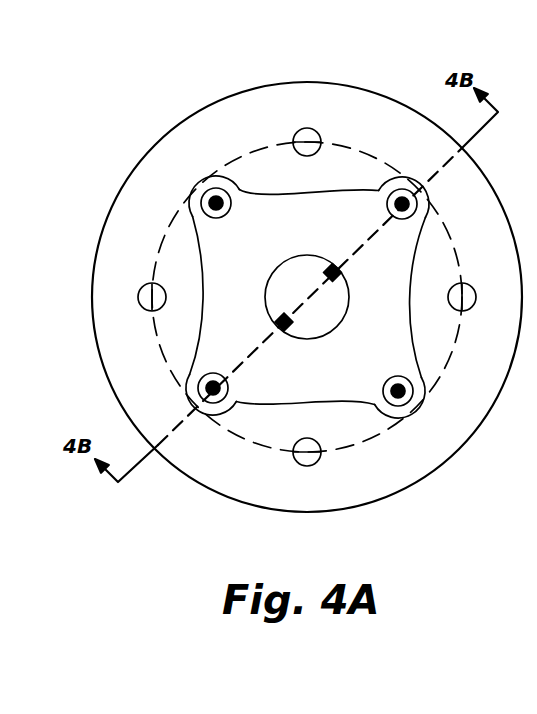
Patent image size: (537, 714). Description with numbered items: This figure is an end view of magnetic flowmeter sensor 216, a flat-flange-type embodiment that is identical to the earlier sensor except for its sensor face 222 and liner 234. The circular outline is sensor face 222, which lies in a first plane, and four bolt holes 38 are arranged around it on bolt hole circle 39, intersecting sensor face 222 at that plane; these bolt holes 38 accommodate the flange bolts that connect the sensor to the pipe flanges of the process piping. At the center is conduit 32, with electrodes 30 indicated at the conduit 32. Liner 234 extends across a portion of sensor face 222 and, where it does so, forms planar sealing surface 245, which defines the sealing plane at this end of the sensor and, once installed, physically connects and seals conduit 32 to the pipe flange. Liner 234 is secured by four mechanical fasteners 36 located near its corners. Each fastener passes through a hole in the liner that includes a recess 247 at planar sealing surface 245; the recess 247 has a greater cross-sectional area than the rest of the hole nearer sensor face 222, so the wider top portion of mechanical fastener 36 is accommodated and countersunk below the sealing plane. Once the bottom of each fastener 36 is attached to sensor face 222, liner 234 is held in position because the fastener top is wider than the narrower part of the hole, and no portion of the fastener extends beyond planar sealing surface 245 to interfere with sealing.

The magnetic flowmeter sensor 216 is at (370, 90).
The bolt holes 38 is at (310, 128).
The mechanical fasteners 36 is at (210, 193).
The recess 247 is at (233, 181).
The planar sealing surface 245 is at (250, 298).
The electrodes 30 is at (323, 271).
The conduit 32 is at (334, 323).
The liner 234 is at (197, 315).
The sensor face 222 is at (353, 415).
The bolt hole circle 39 is at (253, 445).